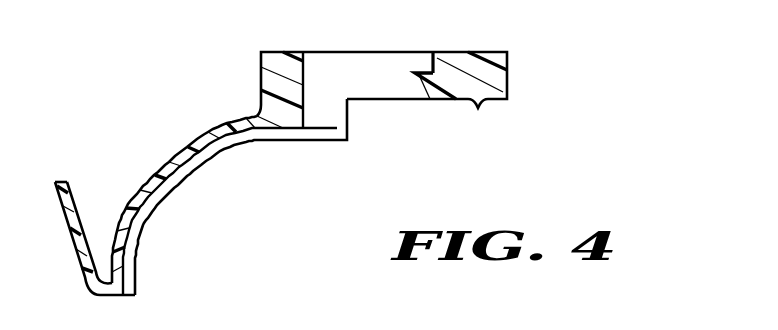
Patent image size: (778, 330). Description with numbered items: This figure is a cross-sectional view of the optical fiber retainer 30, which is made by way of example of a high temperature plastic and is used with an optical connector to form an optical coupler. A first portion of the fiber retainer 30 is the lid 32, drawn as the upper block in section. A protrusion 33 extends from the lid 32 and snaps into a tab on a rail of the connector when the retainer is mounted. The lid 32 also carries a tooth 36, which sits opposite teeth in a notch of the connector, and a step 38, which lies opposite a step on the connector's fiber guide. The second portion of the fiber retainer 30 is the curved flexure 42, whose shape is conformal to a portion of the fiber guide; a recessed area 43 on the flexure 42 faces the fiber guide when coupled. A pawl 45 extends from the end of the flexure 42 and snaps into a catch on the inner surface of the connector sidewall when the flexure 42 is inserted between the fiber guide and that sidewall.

The optical fiber retainer 30 is at (567, 200).
The lid 32 is at (497, 51).
The protrusion 33 is at (431, 71).
The tooth 36 is at (478, 112).
The step 38 is at (348, 117).
The flexure 42 is at (163, 160).
The recessed area 43 is at (223, 148).
The pawl 45 is at (59, 181).